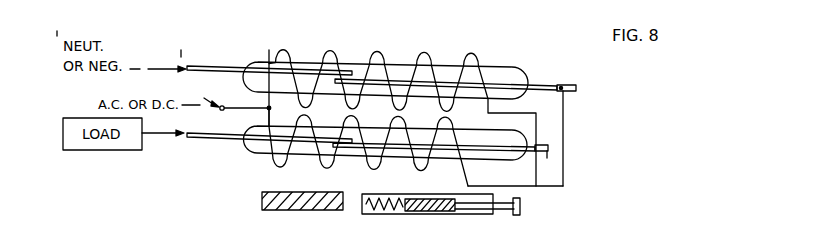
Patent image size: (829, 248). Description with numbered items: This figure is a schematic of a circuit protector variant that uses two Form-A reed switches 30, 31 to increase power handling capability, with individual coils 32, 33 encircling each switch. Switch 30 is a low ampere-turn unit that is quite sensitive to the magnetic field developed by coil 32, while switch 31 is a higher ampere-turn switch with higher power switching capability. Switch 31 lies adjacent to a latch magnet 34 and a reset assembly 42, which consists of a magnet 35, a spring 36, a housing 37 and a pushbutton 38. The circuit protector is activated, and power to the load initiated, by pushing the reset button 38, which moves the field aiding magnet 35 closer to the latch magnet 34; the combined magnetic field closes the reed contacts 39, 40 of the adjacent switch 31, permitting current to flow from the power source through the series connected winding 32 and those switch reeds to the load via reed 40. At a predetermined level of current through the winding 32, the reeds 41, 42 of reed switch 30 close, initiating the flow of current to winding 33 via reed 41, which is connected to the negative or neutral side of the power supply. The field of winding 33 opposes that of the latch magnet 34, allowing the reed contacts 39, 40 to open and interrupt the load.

The reed switch 30 is at (512, 66).
The reed switch 31 is at (257, 155).
The coil 32 is at (270, 50).
The coil 33 is at (351, 116).
The latch magnet 34 is at (308, 213).
The magnet 35 is at (443, 215).
The spring 36 is at (376, 213).
The housing 37 is at (465, 215).
The pushbutton 38 is at (522, 207).
The reed contact 39 is at (547, 158).
The reed contact 40 is at (207, 145).
The reed 41 is at (212, 43).
The reed 42 is at (560, 84).